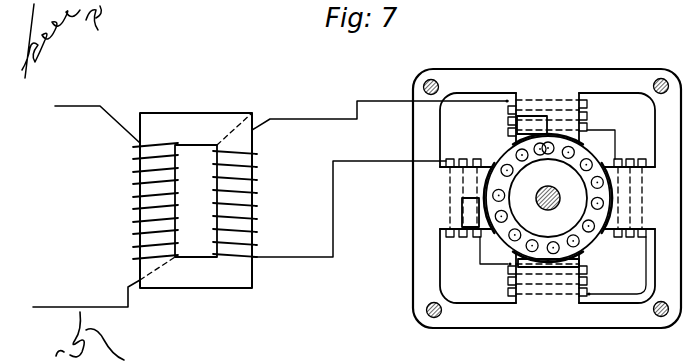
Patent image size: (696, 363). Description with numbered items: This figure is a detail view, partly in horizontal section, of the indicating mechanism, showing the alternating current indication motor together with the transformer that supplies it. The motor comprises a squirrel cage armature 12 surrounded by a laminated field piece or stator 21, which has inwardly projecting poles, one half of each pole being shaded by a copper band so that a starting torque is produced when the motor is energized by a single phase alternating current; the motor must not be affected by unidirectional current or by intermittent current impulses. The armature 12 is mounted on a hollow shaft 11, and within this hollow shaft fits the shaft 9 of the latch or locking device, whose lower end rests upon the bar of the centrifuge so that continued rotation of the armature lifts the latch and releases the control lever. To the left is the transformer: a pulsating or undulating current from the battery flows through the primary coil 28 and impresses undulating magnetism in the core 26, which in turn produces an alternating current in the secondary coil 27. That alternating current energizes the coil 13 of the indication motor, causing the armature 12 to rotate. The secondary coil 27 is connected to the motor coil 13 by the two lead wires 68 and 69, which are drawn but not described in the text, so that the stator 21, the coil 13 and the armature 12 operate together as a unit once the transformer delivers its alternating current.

The shaft 9 is at (540, 204).
The hollow shaft 11 is at (547, 189).
The squirrel cage armature 12 is at (591, 239).
The coil 13 is at (452, 161).
The laminated field piece or stator 21 is at (421, 229).
The core 26 is at (205, 286).
The secondary coil 27 is at (257, 201).
The primary coil 28 is at (137, 208).
The lead wire 68 is at (370, 102).
The lead wire 69 is at (287, 259).